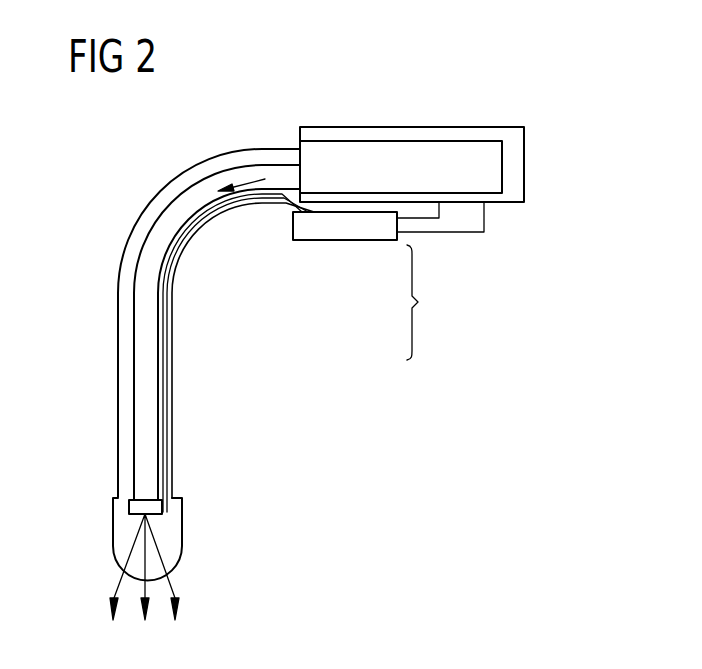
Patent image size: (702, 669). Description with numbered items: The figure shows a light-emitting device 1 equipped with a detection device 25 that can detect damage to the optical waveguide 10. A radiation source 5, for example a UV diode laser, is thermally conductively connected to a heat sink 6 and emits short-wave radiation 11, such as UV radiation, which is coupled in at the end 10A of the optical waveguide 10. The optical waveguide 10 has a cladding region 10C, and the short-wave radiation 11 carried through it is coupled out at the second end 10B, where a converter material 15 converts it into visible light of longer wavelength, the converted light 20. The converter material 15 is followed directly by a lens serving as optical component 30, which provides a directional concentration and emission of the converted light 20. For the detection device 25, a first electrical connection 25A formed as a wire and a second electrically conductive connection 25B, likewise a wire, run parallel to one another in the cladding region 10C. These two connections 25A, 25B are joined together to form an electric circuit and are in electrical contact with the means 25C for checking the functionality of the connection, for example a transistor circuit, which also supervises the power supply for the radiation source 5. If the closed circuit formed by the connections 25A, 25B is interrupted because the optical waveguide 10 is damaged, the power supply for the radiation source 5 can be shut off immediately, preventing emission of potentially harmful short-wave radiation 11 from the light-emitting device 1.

The light-emitting device 1 is at (530, 112).
The radiation source 5 is at (424, 150).
The heat sink 6 is at (515, 168).
The optical waveguide 10 is at (175, 416).
The end of the optical waveguide 10A is at (300, 167).
The second end of the optical waveguide 10B is at (150, 497).
The cladding region 10C is at (160, 210).
The short-wave radiation 11 is at (252, 180).
The converter material 15 is at (129, 505).
The converted light 20 is at (175, 585).
The detection device 25 is at (427, 302).
The first electrical connection 25A is at (167, 304).
The second electrically conductive connection 25B is at (171, 356).
The means for checking the functionality of the electrically conductive connection 25C is at (348, 230).
The optical component 30 is at (177, 539).